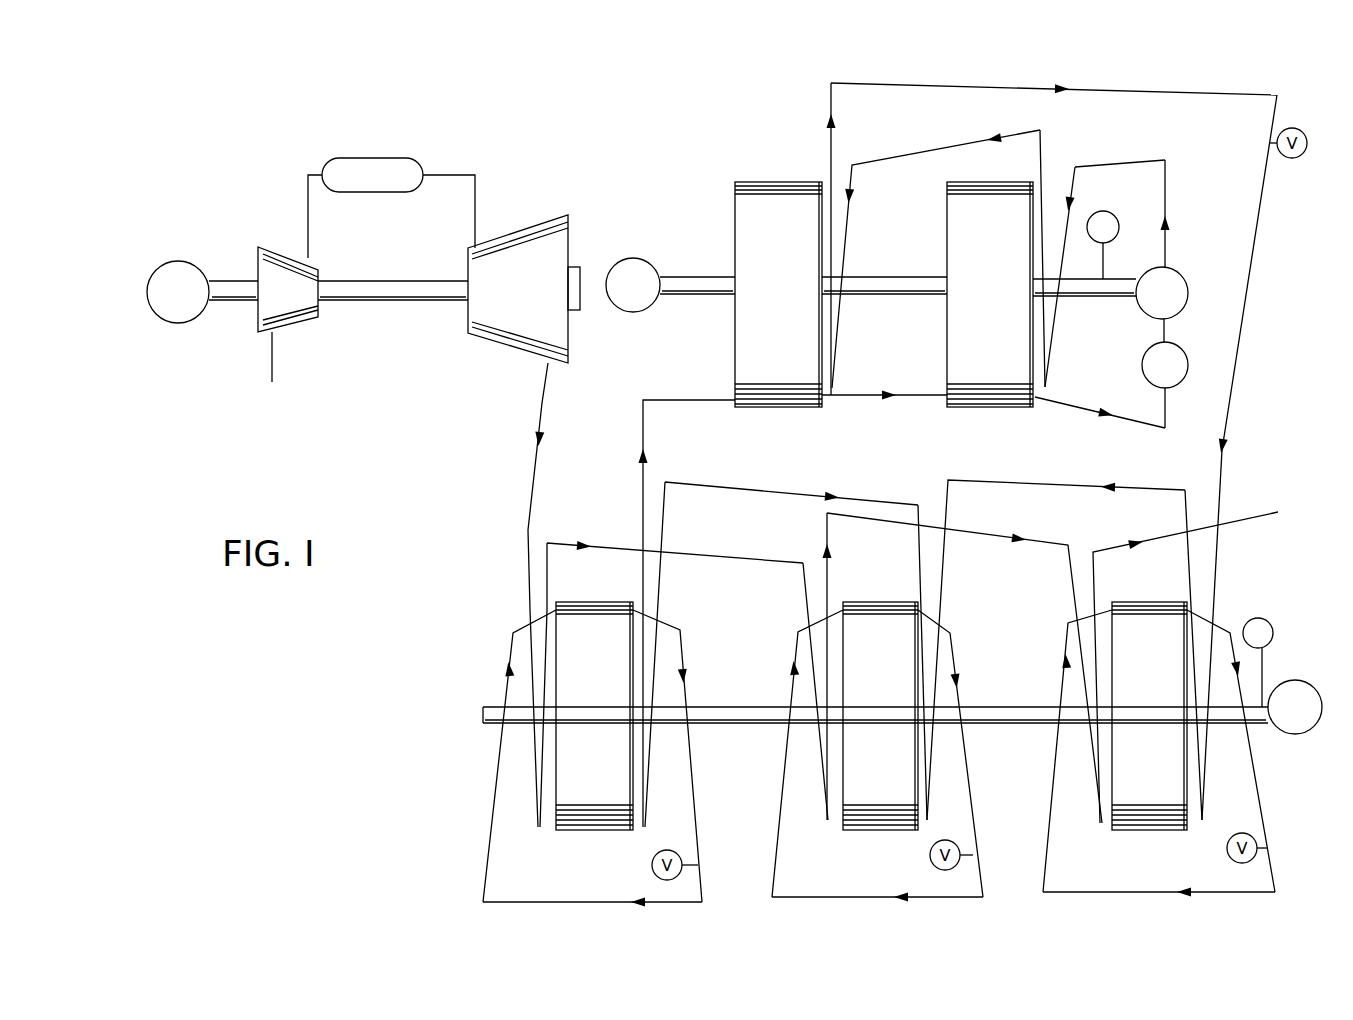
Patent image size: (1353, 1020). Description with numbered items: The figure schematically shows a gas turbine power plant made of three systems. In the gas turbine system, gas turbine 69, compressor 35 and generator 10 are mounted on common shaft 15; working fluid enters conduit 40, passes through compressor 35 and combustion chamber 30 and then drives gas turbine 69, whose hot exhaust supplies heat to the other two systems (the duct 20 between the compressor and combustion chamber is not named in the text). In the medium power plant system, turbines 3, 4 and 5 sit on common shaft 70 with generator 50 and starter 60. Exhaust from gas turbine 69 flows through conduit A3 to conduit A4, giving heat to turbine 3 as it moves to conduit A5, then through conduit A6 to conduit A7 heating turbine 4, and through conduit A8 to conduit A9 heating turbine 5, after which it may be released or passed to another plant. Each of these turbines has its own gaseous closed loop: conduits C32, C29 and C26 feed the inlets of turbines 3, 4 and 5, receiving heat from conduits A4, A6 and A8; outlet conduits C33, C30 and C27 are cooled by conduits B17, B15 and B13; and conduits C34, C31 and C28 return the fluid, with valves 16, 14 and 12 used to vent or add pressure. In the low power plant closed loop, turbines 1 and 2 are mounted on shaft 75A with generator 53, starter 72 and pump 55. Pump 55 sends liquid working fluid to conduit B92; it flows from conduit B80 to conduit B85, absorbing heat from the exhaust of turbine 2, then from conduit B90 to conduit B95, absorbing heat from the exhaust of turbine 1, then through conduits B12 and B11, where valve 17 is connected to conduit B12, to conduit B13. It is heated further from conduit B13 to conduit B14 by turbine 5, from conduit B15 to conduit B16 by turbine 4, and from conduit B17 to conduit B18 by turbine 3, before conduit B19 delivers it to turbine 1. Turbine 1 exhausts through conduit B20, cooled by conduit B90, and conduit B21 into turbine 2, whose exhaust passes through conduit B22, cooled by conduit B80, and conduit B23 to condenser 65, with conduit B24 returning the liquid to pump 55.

The generator 10 is at (208, 280).
The conduit 40 is at (270, 348).
The compressor 35 is at (320, 271).
The conduit 20 is at (298, 201).
The combustion chamber 30 is at (397, 159).
The common shaft 15 is at (440, 281).
The gas turbine 69 is at (550, 228).
The conduit A3 is at (541, 405).
The conduit A4 is at (527, 565).
The conduit A5 is at (618, 545).
The conduit A6 is at (778, 561).
The conduit A7 is at (830, 578).
The conduit A8 is at (1071, 573).
The conduit A9 is at (1175, 534).
The generator 53 is at (660, 270).
The turbine 1 is at (770, 249).
The turbine 2 is at (982, 260).
The turbine 3 is at (580, 669).
The turbine 4 is at (870, 669).
The turbine 5 is at (1137, 660).
The shaft 75A is at (868, 281).
The pump 55 is at (1183, 280).
The condenser 65 is at (1186, 352).
The starter 72 is at (1112, 216).
The valve 17 is at (1303, 135).
The conduit B95 is at (829, 145).
The conduit B12 is at (1248, 92).
The conduit B11 is at (1264, 168).
The conduit B13 is at (1217, 508).
The conduit B90 is at (913, 157).
The conduit B85 is at (1046, 163).
The conduit B80 is at (1138, 158).
The conduit B92 is at (1166, 202).
The conduit B24 is at (1162, 332).
The conduit B23 is at (1163, 403).
The conduit B22 is at (1143, 424).
The conduit B19 is at (712, 398).
The conduit B18 is at (641, 473).
The conduit B20 is at (850, 397).
The conduit B21 is at (928, 393).
The conduit B17 is at (723, 485).
The conduit B16 is at (883, 502).
The conduit B15 is at (1010, 480).
The conduit B14 is at (1152, 488).
The common shaft 70 is at (1047, 703).
The generator 50 is at (1320, 684).
The starter 60 is at (1273, 632).
The conduit C32 is at (512, 648).
The conduit C33 is at (687, 692).
The conduit C34 is at (665, 905).
The valve 16 is at (650, 865).
The conduit C29 is at (790, 638).
The conduit C30 is at (957, 668).
The conduit C31 is at (942, 897).
The valve 14 is at (930, 855).
The conduit C26 is at (1068, 635).
The conduit C27 is at (1220, 622).
The conduit C28 is at (1233, 893).
The valve 12 is at (1227, 848).